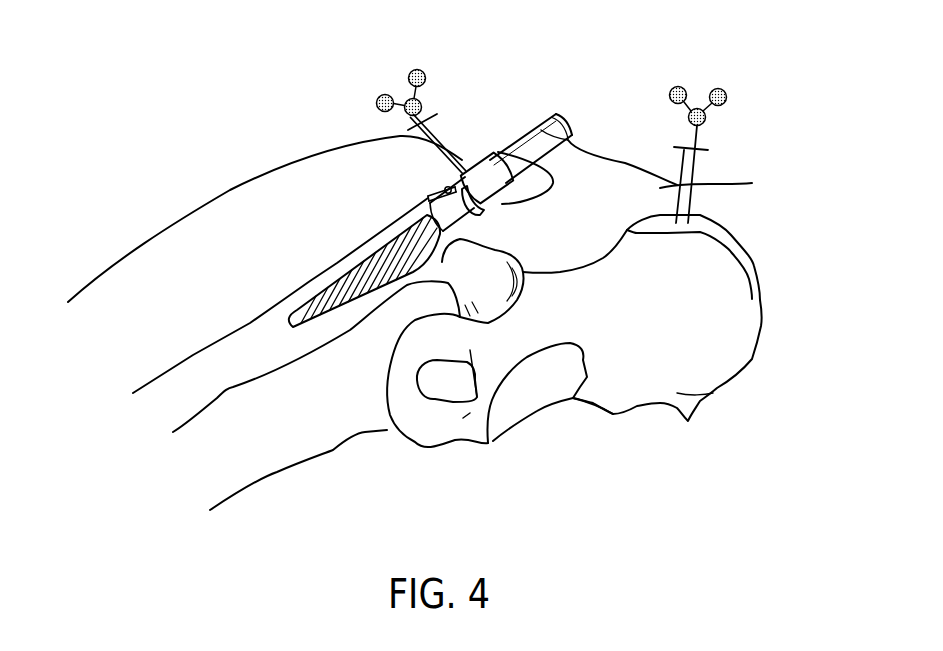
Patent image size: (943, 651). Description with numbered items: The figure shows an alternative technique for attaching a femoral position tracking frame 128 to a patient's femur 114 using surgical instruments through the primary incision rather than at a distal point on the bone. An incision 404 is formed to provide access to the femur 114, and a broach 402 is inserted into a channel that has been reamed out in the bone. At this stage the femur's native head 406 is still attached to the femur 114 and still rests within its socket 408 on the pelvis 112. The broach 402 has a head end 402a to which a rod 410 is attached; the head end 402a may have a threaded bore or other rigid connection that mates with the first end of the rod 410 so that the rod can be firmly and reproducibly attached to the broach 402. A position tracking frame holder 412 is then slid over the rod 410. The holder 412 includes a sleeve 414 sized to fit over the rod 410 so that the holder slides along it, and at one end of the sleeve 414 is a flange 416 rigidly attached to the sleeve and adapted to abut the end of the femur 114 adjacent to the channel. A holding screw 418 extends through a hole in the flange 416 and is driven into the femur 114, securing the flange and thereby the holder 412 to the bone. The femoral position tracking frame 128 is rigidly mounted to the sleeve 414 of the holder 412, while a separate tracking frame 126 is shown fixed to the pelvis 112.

The pelvis 112 is at (761, 325).
The femur 114 is at (194, 354).
The pelvic tracker array 126 is at (702, 138).
The femoral position tracking frame 128 is at (425, 91).
The broach 402 is at (340, 268).
The head end 402a is at (403, 217).
The incision 404 is at (574, 147).
The native head 406 is at (507, 250).
The socket 408 is at (507, 310).
The rod 410 is at (560, 114).
The position tracking frame holder 412 is at (474, 171).
The sleeve 414 is at (504, 207).
The flange 416 is at (446, 188).
The holding screw 418 is at (431, 198).